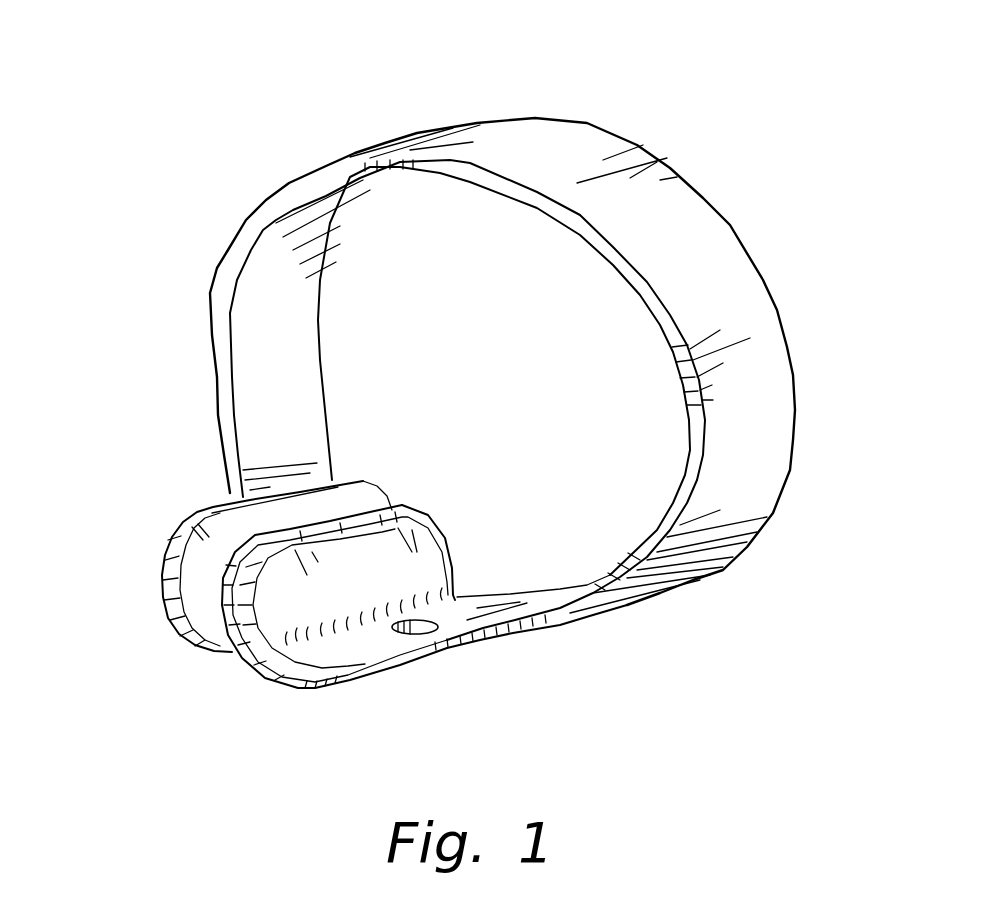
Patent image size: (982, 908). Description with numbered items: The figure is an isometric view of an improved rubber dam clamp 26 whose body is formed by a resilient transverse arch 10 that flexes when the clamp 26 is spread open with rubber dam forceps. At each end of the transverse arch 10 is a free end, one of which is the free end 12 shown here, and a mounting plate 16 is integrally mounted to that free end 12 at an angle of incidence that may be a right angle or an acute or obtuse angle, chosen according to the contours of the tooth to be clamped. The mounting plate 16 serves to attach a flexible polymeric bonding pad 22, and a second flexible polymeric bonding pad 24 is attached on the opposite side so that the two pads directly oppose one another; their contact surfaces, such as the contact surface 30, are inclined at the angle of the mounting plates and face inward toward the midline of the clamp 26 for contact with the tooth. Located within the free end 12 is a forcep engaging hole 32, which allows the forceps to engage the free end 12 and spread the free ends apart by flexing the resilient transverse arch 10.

The resilient transverse arch 10 is at (730, 245).
The free end 12 is at (368, 640).
The mounting plate 16 is at (323, 587).
The polymeric bonding pad 22 is at (232, 638).
The polymeric bonding pad 24 is at (175, 538).
The rubber dam clamp 26 is at (414, 128).
The contact surface 30 is at (188, 592).
The forcep engaging hole 32 is at (423, 627).